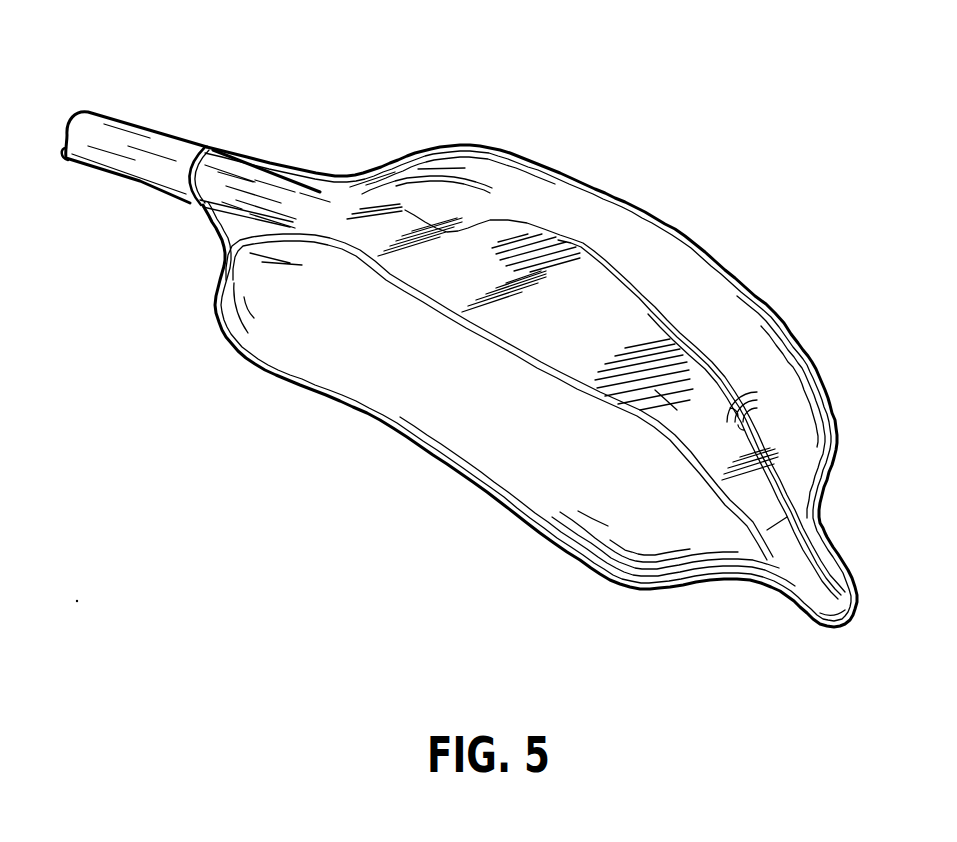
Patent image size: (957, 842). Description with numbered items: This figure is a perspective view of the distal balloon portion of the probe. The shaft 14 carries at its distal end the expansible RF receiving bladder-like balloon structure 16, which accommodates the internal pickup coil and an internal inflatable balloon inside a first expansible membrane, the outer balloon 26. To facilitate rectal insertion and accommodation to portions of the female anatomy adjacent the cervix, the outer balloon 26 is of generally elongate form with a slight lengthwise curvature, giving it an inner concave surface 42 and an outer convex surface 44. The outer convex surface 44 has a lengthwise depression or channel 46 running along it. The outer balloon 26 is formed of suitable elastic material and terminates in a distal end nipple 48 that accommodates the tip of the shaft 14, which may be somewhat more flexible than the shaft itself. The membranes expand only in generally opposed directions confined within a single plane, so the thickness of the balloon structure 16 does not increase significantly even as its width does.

The shaft 14 is at (94, 130).
The balloon structure 16 is at (666, 196).
The outer balloon 26 is at (424, 144).
The inner concave surface 42 is at (442, 465).
The outer convex surface 44 is at (747, 308).
The channel 46 is at (720, 403).
The distal end nipple 48 is at (846, 603).